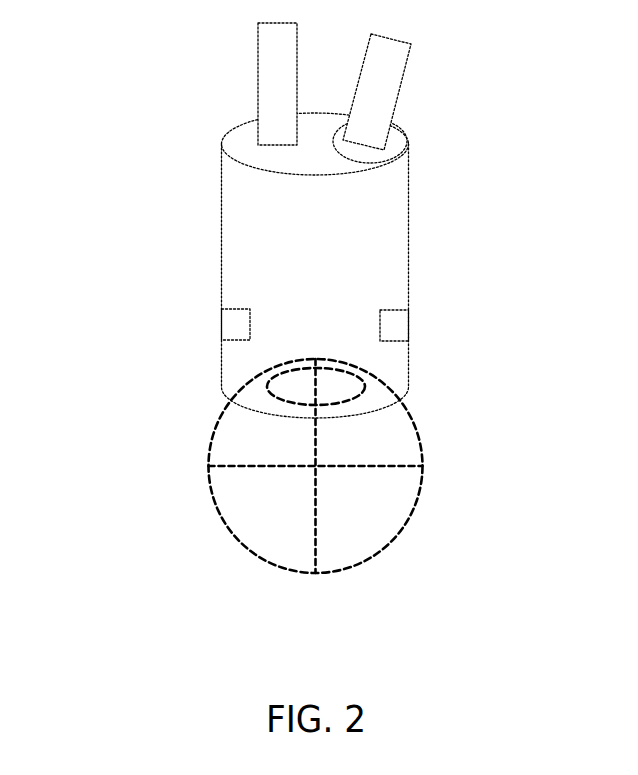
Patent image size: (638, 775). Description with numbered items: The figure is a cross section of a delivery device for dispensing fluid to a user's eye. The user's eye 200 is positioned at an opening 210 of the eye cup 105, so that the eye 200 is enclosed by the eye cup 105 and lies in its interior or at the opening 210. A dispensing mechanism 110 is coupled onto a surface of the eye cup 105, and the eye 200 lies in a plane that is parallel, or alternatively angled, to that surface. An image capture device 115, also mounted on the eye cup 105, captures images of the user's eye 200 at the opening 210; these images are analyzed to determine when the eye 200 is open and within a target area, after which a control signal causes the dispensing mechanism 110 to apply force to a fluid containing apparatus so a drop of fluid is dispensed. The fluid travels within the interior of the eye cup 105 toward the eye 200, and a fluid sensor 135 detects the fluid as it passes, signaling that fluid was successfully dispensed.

The eye cup 105 is at (213, 264).
The dispensing mechanism 110 is at (249, 80).
The image capture device 115 is at (402, 89).
The fluid sensor 135 is at (213, 328).
The user's eye 200 is at (200, 463).
The opening 210 is at (417, 392).